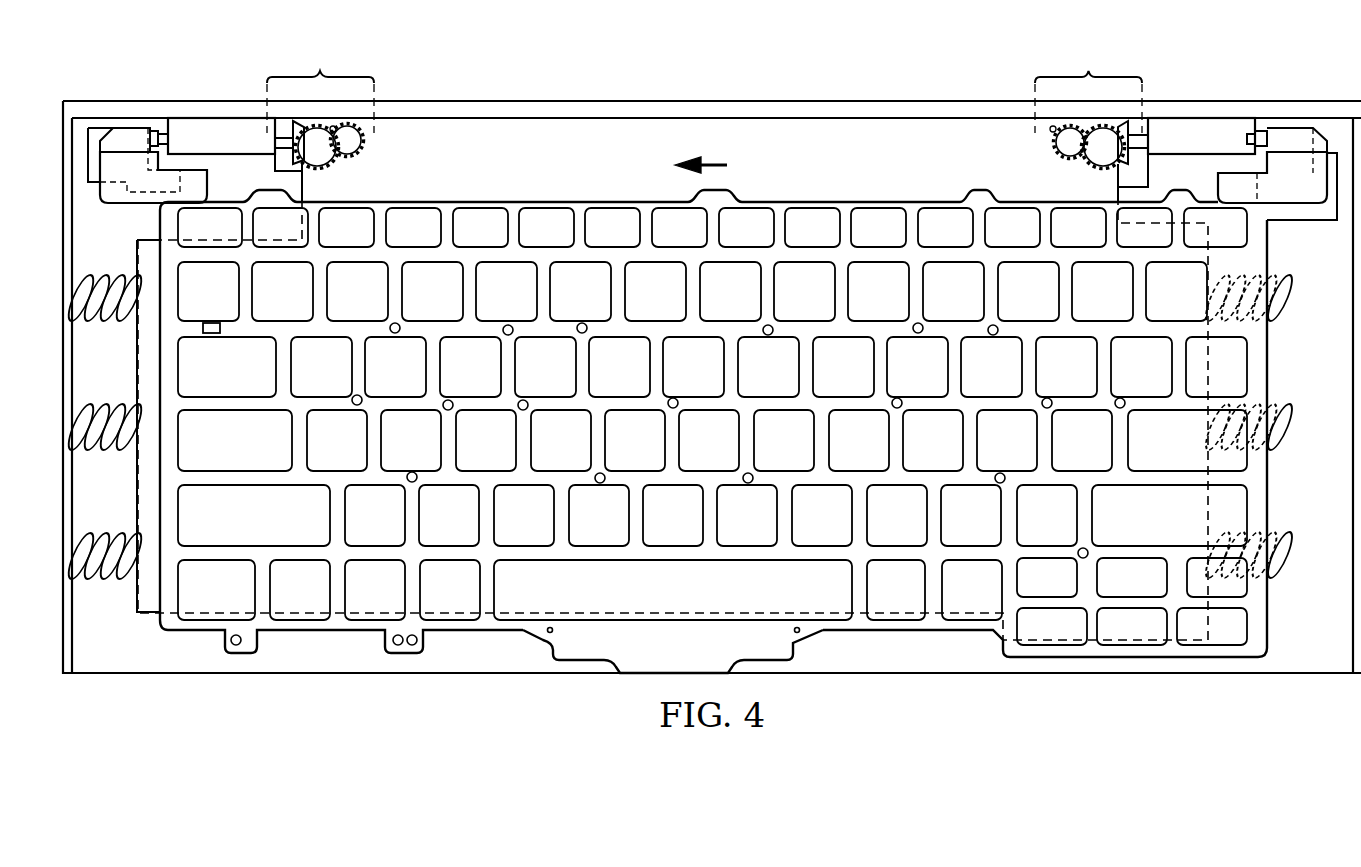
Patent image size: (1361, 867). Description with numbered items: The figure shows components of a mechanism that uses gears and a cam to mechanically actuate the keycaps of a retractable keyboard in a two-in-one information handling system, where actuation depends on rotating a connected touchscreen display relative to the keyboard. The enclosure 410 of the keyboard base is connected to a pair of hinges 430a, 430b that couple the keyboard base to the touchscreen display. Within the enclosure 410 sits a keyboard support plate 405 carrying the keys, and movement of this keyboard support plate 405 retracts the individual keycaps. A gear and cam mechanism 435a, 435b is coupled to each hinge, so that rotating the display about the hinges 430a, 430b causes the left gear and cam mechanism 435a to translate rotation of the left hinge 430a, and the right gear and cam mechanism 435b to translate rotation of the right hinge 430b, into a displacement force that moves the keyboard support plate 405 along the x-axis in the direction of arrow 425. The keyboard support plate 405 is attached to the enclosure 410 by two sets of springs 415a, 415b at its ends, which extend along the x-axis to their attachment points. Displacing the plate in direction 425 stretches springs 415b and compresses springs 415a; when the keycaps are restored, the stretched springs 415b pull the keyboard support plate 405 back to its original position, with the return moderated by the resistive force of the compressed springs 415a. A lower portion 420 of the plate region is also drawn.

The keyboard support plate 405 is at (515, 140).
The enclosure 410 is at (328, 663).
The springs 415a is at (118, 272).
The springs 415b is at (1285, 450).
The lower plate extension 420 is at (582, 650).
The arrow 425 is at (712, 162).
The left hinge 430a is at (223, 133).
The right hinge 430b is at (1203, 133).
The left gear and cam mechanism 435a is at (320, 105).
The right gear and cam mechanism 435b is at (1088, 105).